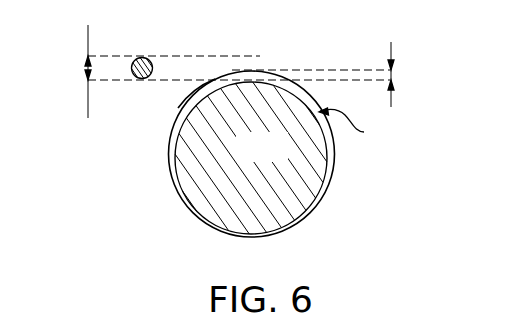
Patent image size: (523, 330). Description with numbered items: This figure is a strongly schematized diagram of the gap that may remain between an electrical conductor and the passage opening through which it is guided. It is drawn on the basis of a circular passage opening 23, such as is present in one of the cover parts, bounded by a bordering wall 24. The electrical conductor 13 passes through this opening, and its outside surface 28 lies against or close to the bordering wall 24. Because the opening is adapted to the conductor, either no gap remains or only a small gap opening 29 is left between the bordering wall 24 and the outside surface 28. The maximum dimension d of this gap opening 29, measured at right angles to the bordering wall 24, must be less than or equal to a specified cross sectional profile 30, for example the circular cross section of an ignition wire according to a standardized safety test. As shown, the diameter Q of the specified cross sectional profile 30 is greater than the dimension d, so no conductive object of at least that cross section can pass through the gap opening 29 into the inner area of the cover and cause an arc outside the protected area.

The electrical conductor 13 is at (206, 181).
The passage opening 23 is at (333, 178).
The bordering wall 24 is at (292, 98).
The outside surface 28 is at (356, 127).
The gap opening 29 is at (197, 90).
The specified cross sectional profile 30 is at (140, 57).
The diameter of the specified cross sectional profile Q is at (86, 71).
The maximum dimension of the gap opening d is at (393, 78).